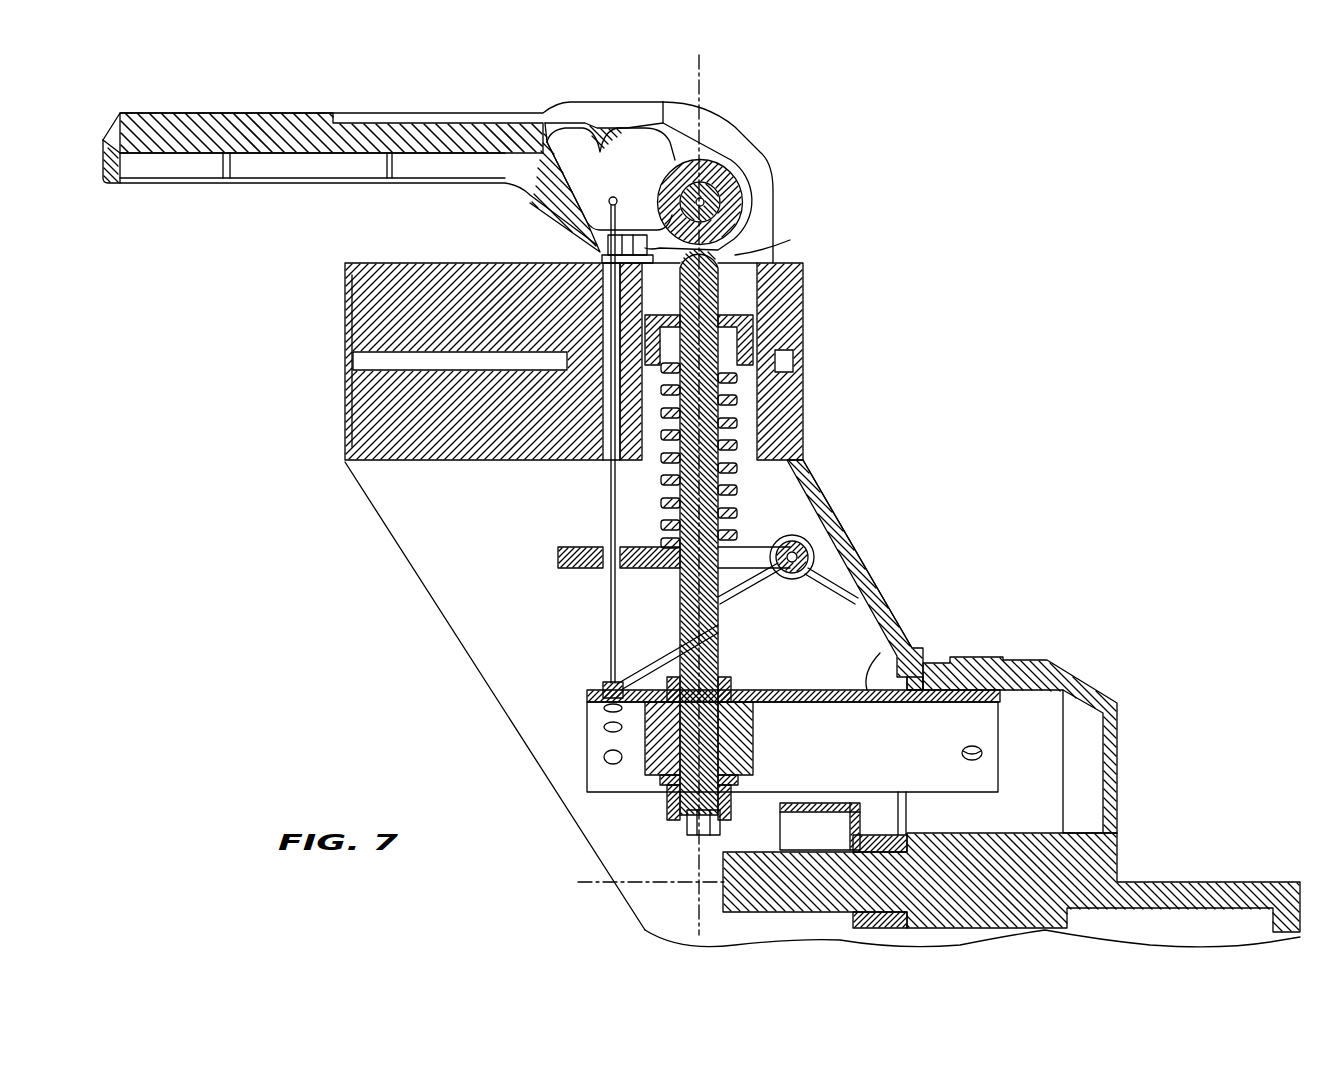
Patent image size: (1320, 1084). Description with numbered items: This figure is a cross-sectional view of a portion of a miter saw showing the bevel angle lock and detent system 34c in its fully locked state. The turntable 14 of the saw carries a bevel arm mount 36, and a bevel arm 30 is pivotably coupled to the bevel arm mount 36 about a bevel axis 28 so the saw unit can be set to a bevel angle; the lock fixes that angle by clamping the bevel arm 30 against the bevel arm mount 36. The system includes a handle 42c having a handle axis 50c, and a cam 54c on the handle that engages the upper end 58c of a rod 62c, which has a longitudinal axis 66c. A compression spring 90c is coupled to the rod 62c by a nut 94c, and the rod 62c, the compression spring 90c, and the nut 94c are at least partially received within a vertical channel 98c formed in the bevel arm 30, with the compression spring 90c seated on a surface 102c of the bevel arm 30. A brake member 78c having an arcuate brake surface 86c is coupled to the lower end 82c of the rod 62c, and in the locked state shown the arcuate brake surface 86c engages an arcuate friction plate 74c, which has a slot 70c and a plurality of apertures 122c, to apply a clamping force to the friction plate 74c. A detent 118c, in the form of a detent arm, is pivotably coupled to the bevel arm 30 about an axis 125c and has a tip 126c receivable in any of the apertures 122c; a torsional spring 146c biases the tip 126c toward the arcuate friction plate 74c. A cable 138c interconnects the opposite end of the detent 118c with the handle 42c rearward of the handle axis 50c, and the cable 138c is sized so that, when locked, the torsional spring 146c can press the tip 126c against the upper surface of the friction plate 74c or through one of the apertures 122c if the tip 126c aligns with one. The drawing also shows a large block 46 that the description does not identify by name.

The handle 42c is at (388, 112).
The handle axis 50c is at (705, 200).
The cam 54c is at (760, 227).
The upper end of rod 58c is at (720, 262).
The rod 62c is at (704, 293).
The bevel angle lock and detent system 34c is at (956, 347).
The housing block 46 is at (385, 262).
The nut 94c is at (752, 340).
The compression spring 90c is at (736, 400).
The vertical channel 98c is at (760, 443).
The bevel arm 30 is at (817, 505).
The surface of bevel arm 102c is at (752, 543).
The axis 125c is at (813, 560).
The torsional spring 146c is at (868, 598).
The arcuate friction plate 74c is at (880, 653).
The bevel arm mount 36 is at (1053, 663).
The cable 138c is at (611, 515).
The detent 118c is at (650, 652).
The brake member 78c is at (727, 678).
The arcuate brake surface 86c is at (748, 692).
The tip 126c is at (600, 683).
The apertures 122c is at (604, 756).
The slot 70c is at (640, 704).
The lower end of rod 82c is at (668, 800).
The longitudinal axis 66c is at (700, 862).
The bevel axis 28 is at (604, 884).
The turntable 14 is at (1190, 884).